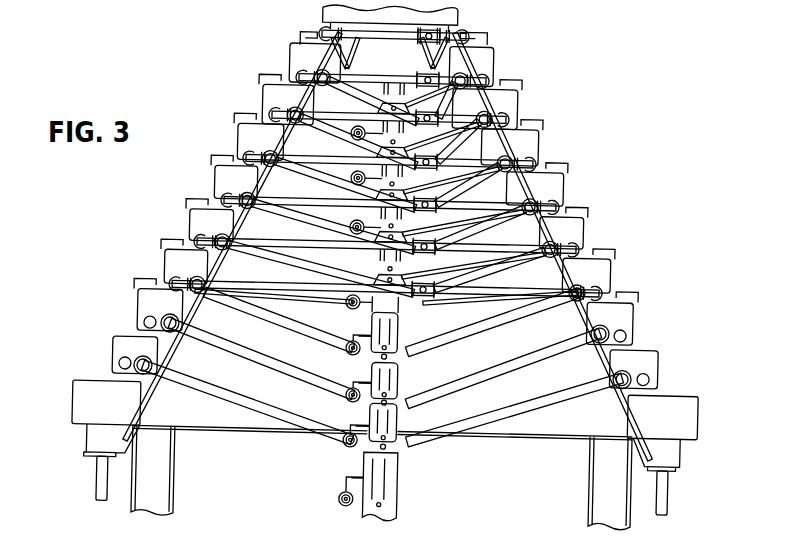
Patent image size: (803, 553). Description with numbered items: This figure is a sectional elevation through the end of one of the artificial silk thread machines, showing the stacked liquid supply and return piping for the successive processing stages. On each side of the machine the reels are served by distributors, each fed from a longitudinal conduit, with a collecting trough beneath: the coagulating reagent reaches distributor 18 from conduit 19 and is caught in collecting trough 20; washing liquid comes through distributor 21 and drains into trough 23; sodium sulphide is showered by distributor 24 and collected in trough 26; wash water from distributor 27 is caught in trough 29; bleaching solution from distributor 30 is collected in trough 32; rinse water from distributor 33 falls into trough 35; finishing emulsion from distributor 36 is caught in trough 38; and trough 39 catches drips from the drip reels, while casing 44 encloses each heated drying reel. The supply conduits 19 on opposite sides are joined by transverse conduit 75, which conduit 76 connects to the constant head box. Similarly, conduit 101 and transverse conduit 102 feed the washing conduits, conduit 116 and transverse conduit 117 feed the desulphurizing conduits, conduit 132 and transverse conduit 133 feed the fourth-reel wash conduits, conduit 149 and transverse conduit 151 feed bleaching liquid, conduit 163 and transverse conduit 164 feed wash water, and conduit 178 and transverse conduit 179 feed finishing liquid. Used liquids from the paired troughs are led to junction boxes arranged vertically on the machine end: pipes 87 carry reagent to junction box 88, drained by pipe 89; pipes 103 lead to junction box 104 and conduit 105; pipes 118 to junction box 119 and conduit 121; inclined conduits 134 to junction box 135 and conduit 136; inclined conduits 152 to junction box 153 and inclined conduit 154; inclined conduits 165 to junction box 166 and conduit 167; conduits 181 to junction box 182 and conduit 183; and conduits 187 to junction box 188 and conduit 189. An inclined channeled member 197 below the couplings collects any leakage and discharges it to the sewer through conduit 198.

The distributor 18 is at (293, 42).
The conduit 19 is at (312, 34).
The collecting trough 20 is at (285, 64).
The distributor 21 is at (258, 81).
The trough 23 is at (258, 104).
The distributor 24 is at (235, 128).
The trough 26 is at (234, 152).
The distributor 27 is at (213, 172).
The collecting trough 29 is at (213, 192).
The distributor 30 is at (189, 213).
The collecting trough 32 is at (189, 233).
The distributor 33 is at (165, 257).
The collecting trough 35 is at (165, 275).
The distributor 36 is at (156, 298).
The trough 38 is at (141, 321).
The trough 39 is at (120, 364).
The casing 44 is at (83, 402).
The transverse conduit 75 is at (365, 34).
The conduit 76 is at (422, 29).
The pipe 87 is at (353, 76).
The junction box 88 is at (383, 102).
The pipe 89 is at (349, 136).
The conduit 101 is at (442, 71).
The transverse conduit 102 is at (331, 76).
The pipe 103 is at (345, 121).
The junction box 104 is at (394, 178).
The conduit 105 is at (348, 181).
The conduit 116 is at (432, 117).
The transverse conduit 117 is at (390, 105).
The pipe 118 is at (297, 179).
The junction box 119 is at (403, 228).
The conduit 121 is at (349, 228).
The conduit 132 is at (397, 140).
The transverse conduit 133 is at (388, 148).
The inclined conduit 134 is at (282, 226).
The junction box 135 is at (376, 272).
The conduit 136 is at (353, 310).
The conduit 149 is at (440, 213).
The transverse conduit 151 is at (389, 190).
The inclined conduit 152 is at (255, 262).
The junction box 153 is at (399, 332).
The inclined conduit 154 is at (352, 357).
The conduit 163 is at (433, 266).
The transverse conduit 164 is at (386, 234).
The inclined conduit 165 is at (264, 323).
The junction box 166 is at (400, 375).
The conduit 167 is at (351, 404).
The conduit 178 is at (451, 305).
The transverse conduit 179 is at (280, 295).
The conduit 181 is at (227, 359).
The junction box 182 is at (400, 418).
The conduit 183 is at (347, 447).
The conduit 187 is at (203, 400).
The junction box 188 is at (400, 478).
The conduit 189 is at (344, 504).
The inclined channeled member 197 is at (171, 453).
The conduit 198 is at (103, 495).